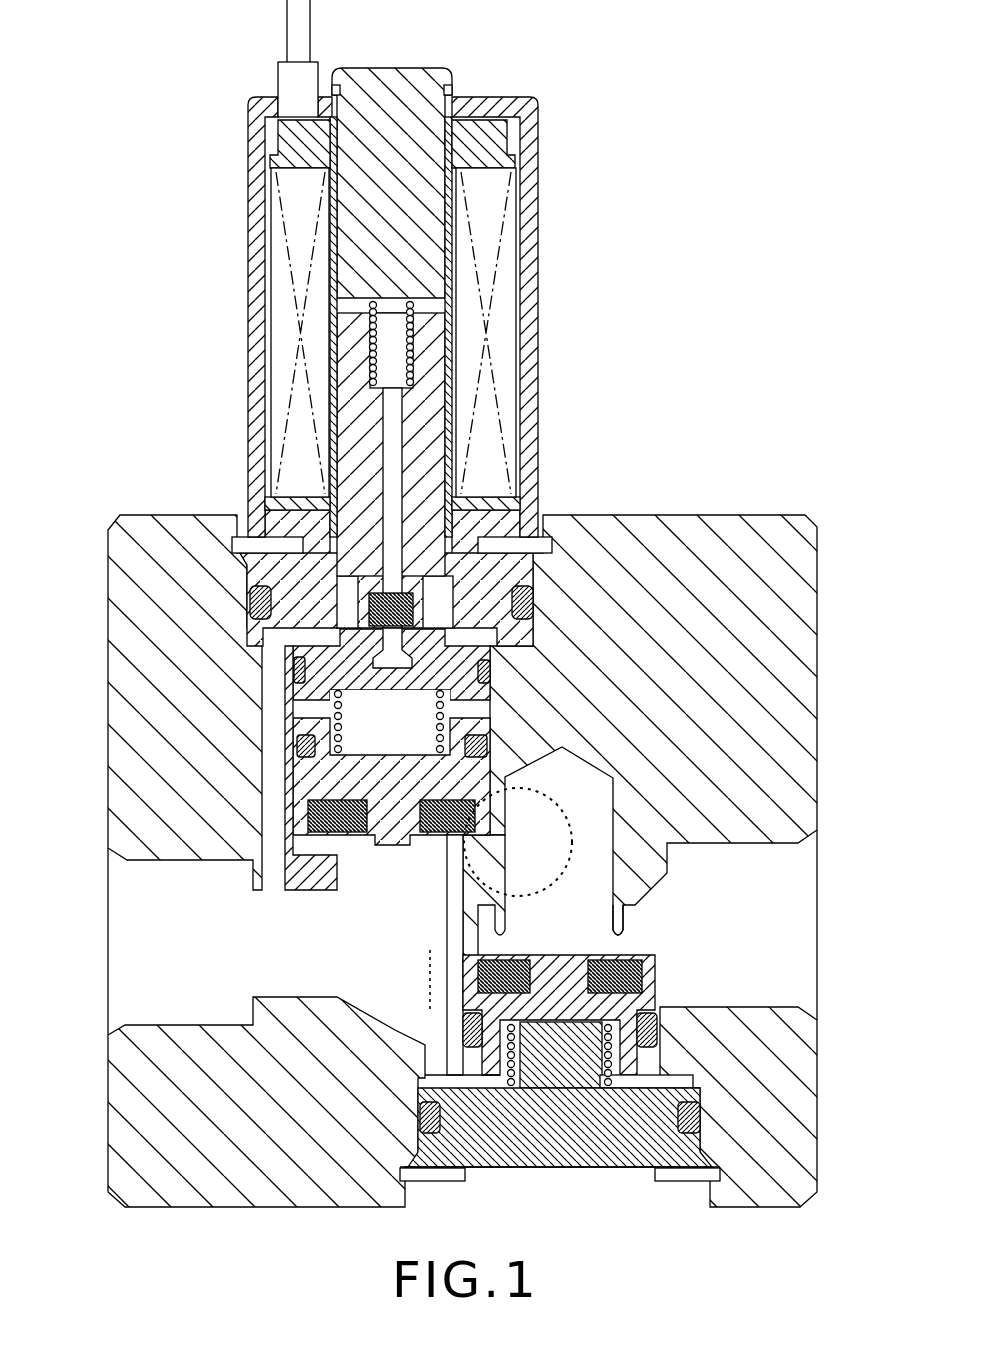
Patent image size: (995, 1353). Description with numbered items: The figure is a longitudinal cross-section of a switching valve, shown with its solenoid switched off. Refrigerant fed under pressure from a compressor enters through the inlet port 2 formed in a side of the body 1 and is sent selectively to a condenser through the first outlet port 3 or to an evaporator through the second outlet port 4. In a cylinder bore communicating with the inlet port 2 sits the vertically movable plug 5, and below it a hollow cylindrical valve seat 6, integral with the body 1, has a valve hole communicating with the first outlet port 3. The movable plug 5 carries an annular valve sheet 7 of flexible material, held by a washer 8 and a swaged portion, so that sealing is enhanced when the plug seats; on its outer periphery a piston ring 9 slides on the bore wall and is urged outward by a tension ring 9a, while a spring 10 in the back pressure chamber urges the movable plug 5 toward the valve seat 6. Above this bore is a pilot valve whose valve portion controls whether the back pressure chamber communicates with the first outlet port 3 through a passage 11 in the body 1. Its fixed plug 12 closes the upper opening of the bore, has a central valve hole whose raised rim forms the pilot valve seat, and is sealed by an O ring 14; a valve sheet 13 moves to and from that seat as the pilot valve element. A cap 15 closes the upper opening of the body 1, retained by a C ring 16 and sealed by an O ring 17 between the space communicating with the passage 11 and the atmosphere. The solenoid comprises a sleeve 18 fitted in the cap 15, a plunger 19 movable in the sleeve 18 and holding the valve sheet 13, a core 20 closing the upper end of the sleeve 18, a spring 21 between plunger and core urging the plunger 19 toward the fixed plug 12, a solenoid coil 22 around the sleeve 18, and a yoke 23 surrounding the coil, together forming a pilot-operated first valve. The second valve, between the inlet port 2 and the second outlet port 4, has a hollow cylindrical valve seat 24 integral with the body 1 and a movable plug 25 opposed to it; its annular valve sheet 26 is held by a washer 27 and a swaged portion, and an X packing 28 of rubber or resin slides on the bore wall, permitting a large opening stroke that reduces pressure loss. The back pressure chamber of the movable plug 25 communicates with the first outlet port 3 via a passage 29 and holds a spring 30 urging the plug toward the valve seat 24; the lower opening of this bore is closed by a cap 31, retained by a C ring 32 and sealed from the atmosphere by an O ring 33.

The body 1 is at (817, 647).
The inlet port 2 is at (548, 815).
The first outlet port 3 is at (108, 935).
The second outlet port 4 is at (817, 920).
The movable plug 5 is at (302, 780).
The valve seat 6 is at (308, 853).
The valve sheet 7 is at (432, 835).
The washer 8 is at (345, 835).
The piston ring 9 is at (300, 745).
The tension ring 9a is at (345, 750).
The spring 10 is at (340, 698).
The passage 11 is at (274, 822).
The fixed plug 12 is at (300, 668).
The valve sheet 13 is at (360, 608).
The O ring 14 is at (492, 672).
The cap 15 is at (250, 573).
The C ring 16 is at (258, 535).
The O ring 17 is at (435, 600).
The sleeve 18 is at (420, 560).
The plunger 19 is at (438, 410).
The core 20 is at (395, 68).
The spring 21 is at (405, 352).
The solenoid coil 22 is at (510, 285).
The yoke 23 is at (538, 180).
The valve seat 24 is at (628, 915).
The movable plug 25 is at (655, 958).
The valve sheet 26 is at (480, 975).
The washer 27 is at (594, 955).
The X packing 28 is at (657, 1025).
The passage 29 is at (440, 1045).
The spring 30 is at (605, 1078).
The cap 31 is at (590, 1168).
The C ring 32 is at (435, 1183).
The O ring 33 is at (700, 1112).